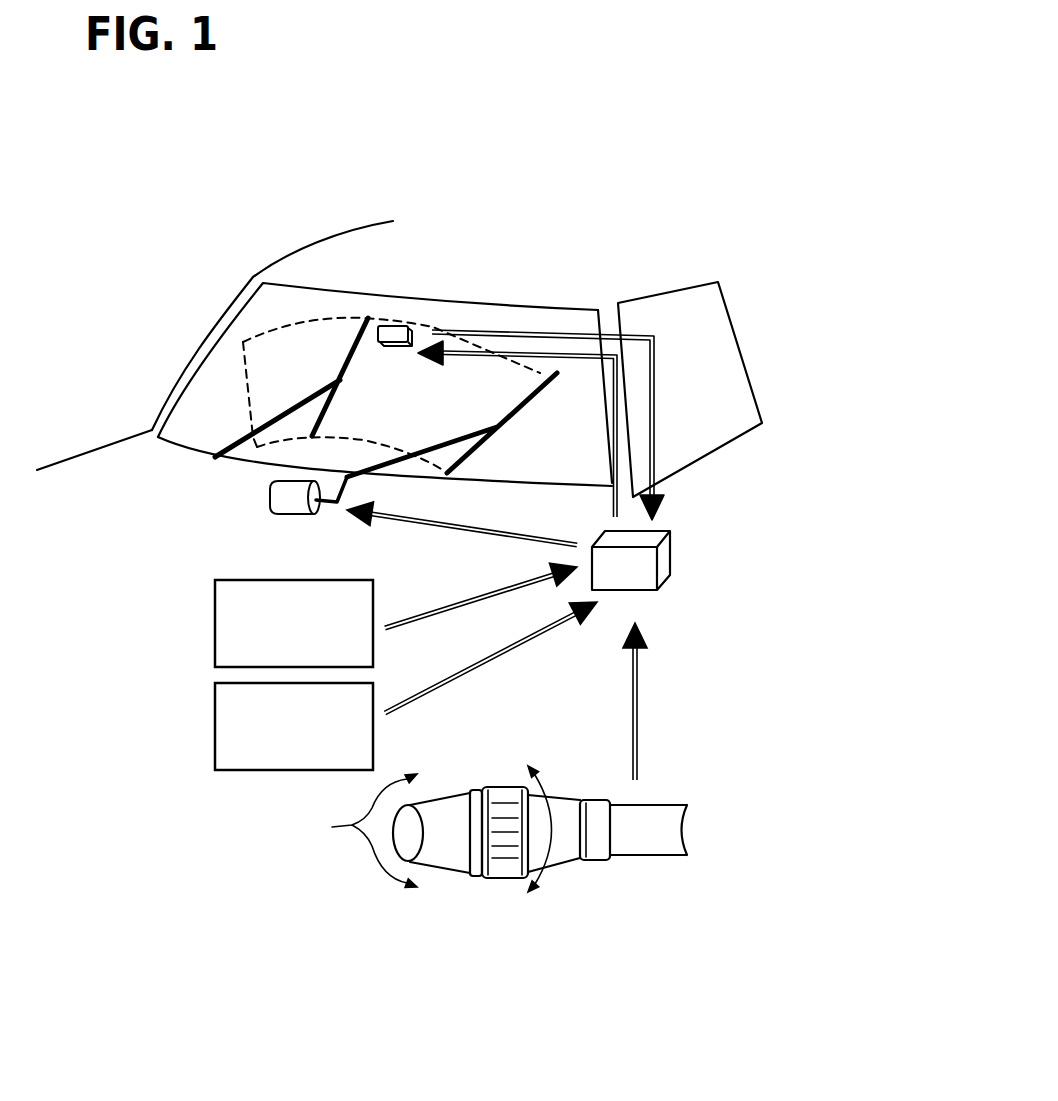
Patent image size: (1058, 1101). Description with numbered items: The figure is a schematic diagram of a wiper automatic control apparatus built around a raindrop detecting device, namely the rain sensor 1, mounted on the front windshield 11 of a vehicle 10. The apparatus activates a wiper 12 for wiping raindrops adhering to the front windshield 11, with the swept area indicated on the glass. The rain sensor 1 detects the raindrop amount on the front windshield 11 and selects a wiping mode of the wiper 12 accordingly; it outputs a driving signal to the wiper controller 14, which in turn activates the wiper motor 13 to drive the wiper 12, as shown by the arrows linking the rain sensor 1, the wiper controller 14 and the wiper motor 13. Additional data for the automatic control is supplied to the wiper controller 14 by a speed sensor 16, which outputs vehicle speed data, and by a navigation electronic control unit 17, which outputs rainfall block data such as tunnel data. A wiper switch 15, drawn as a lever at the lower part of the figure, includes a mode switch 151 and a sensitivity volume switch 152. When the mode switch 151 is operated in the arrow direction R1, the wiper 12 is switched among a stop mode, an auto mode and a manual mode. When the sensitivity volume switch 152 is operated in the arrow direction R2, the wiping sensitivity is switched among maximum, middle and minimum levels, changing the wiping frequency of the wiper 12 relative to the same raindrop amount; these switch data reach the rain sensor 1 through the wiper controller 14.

The rain sensor 1 is at (393, 332).
The vehicle 10 is at (327, 231).
The front windshield 11 is at (197, 403).
The wiper 12 is at (345, 375).
The wiper motor 13 is at (285, 503).
The wiper controller 14 is at (667, 563).
The wiper switch 15 is at (547, 873).
The mode switch 151 is at (443, 853).
The sensitivity volume switch 152 is at (507, 853).
The speed sensor 16 is at (215, 633).
The navigation electronic control unit 17 is at (215, 723).
The arrow direction R1 is at (359, 830).
The arrow direction R2 is at (551, 800).